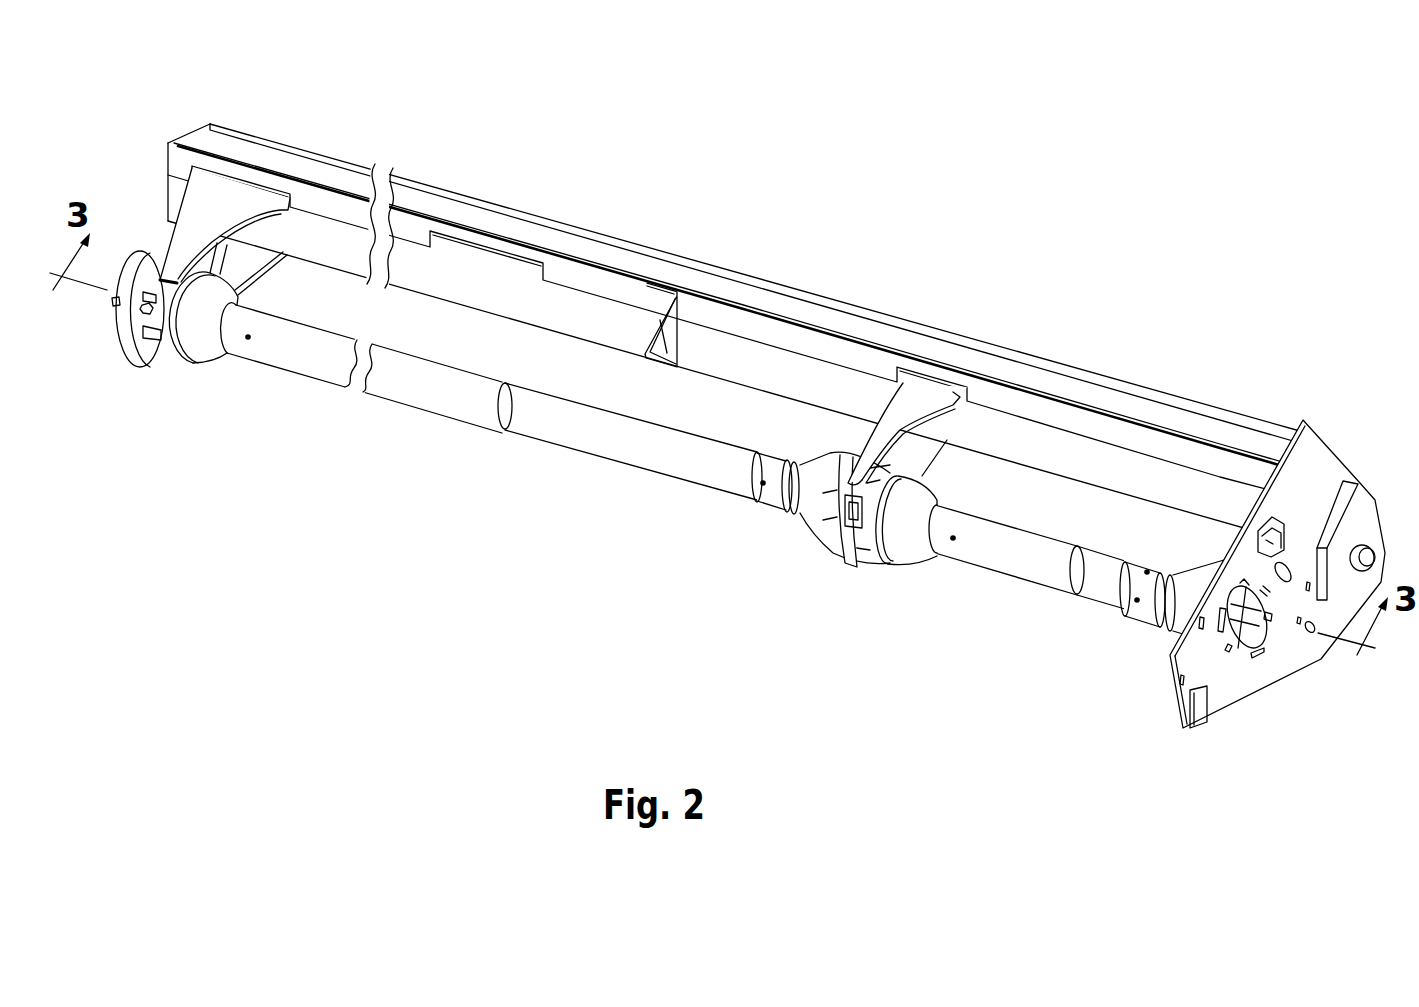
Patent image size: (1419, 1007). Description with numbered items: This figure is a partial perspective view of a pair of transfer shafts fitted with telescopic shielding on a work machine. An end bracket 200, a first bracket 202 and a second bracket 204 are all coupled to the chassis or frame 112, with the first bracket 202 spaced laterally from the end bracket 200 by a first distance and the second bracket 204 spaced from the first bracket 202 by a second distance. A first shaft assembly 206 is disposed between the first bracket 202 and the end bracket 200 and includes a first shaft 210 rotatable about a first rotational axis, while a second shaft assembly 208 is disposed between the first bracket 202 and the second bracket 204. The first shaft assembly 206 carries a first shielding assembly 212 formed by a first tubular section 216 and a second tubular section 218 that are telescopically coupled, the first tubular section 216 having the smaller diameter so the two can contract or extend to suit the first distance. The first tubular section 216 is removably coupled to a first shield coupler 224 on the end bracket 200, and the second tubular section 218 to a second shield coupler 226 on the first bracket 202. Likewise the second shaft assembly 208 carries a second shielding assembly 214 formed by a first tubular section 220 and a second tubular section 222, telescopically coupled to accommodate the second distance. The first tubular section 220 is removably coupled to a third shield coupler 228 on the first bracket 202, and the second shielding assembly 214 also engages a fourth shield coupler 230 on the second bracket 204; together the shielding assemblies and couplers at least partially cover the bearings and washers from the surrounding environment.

The frame 112 is at (750, 295).
The end bracket 200 is at (1305, 452).
The first bracket 202 is at (925, 390).
The second bracket 204 is at (235, 193).
The first shaft assembly 206 is at (998, 708).
The second shaft assembly 208 is at (458, 550).
The first shaft 210 is at (1260, 620).
The first shielding assembly 212 is at (1062, 527).
The second shielding assembly 214 is at (558, 385).
The first tubular section 216 is at (1098, 580).
The second tubular section 218 is at (1005, 557).
The first tubular section 220 is at (613, 442).
The second tubular section 222 is at (423, 385).
The first shield coupler 224 is at (1175, 610).
The second shield coupler 226 is at (905, 523).
The third shield coupler 228 is at (795, 508).
The fourth shield coupler 230 is at (208, 345).